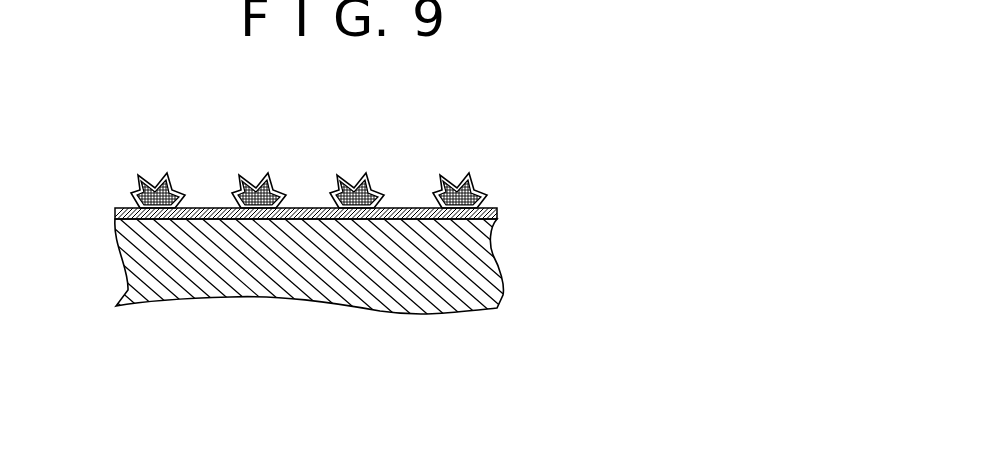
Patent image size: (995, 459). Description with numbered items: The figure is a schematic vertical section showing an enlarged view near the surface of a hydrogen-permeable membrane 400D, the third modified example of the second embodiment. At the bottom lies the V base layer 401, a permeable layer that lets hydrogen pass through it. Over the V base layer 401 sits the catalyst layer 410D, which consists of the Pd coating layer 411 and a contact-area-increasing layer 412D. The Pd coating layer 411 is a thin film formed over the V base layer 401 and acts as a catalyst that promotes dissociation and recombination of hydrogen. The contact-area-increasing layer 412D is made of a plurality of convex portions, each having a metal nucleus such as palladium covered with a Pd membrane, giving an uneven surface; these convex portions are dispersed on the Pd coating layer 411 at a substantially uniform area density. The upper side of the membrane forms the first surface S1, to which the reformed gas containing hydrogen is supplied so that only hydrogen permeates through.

The hydrogen-permeable membrane 400D is at (457, 135).
The V base layer 401 is at (499, 260).
The catalyst layer 410D is at (637, 158).
The Pd coating layer 411 is at (497, 213).
The contact-area-increasing layer 412D is at (495, 185).
The first surface S1 is at (137, 169).